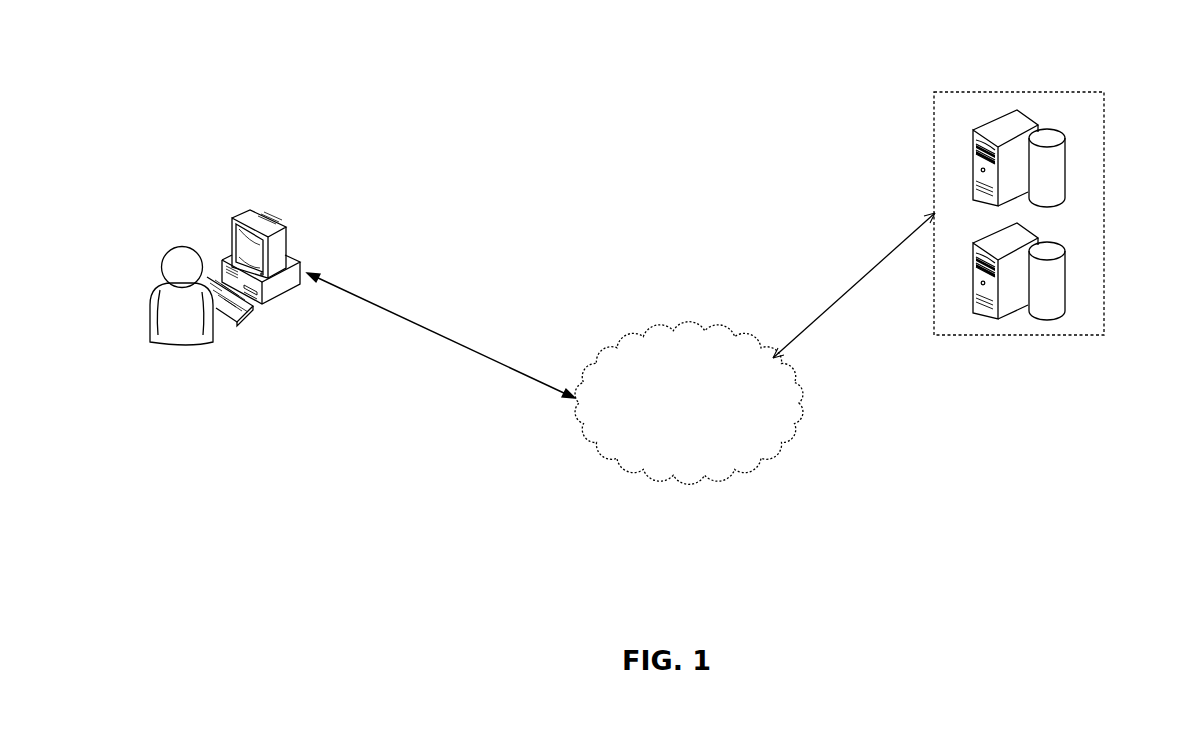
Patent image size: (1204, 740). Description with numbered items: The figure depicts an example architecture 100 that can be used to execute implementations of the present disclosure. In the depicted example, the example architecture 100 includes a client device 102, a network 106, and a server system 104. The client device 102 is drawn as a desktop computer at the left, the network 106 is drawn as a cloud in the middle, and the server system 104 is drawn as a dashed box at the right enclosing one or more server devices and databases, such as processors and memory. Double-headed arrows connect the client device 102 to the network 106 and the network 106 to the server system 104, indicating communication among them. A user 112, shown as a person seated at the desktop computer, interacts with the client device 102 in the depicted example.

The example architecture 100 is at (540, 92).
The client device 102 is at (230, 220).
The server system 104 is at (1104, 213).
The network 106 is at (696, 329).
The user 112 is at (181, 345).